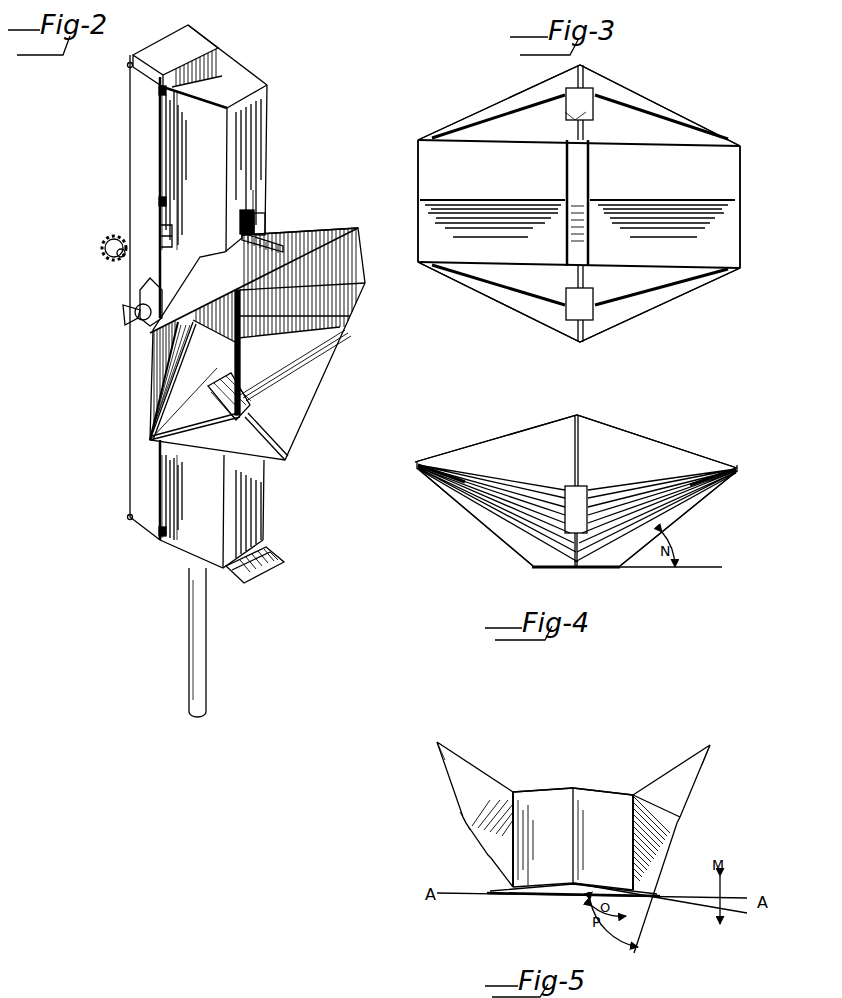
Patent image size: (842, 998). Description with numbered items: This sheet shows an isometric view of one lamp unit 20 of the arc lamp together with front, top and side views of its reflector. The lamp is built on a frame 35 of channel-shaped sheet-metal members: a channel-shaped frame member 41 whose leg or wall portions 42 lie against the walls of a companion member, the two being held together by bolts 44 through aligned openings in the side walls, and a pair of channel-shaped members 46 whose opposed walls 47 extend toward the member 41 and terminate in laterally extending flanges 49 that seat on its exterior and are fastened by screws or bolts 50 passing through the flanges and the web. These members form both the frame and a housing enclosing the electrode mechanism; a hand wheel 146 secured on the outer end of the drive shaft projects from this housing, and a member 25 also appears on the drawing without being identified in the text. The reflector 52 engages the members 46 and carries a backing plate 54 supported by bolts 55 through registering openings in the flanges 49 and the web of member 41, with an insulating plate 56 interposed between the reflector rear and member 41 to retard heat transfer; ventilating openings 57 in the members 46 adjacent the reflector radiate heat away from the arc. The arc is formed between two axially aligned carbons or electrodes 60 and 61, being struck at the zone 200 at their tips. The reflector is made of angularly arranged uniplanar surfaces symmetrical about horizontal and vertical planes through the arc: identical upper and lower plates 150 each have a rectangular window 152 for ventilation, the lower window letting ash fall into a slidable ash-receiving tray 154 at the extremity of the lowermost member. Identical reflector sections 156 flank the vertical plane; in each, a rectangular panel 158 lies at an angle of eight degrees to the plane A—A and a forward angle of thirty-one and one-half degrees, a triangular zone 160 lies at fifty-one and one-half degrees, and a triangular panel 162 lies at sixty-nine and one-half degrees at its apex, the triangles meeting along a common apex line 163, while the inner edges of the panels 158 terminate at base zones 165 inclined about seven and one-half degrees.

In FIG. 2, the lighting fixture assembly 20 is at (288, 214).
In FIG. 2, the support pole 25 is at (190, 600).
In FIG. 2, the frame 35 is at (126, 368).
In FIG. 2, the second channel-shaped frame member 41 is at (200, 58).
In FIG. 2, the leg or wall portions 42 is at (133, 110).
In FIG. 2, the bolts 44 is at (127, 65).
In FIG. 2, the channel-shaped members 46 is at (270, 102).
In FIG. 2, the opposed walls or leg portions 47 is at (186, 120).
In FIG. 2, the laterally extending flanges 49 is at (166, 140).
In FIG. 2, the screws or bolts 50 is at (160, 90).
In FIG. 2, the reflector 52 is at (328, 397).
In FIG. 3, the reflector 52 is at (473, 296).
In FIG. 4, the reflector 52 is at (545, 417).
In FIG. 5, the reflector 52 is at (553, 787).
In FIG. 2, the backing plate 54 is at (140, 303).
In FIG. 4, the backing plate 54 is at (540, 570).
In FIG. 5, the backing plate 54 is at (500, 897).
In FIG. 2, the bolts 55 is at (140, 290).
In FIG. 2, the insulating plate 56 is at (162, 243).
In FIG. 2, the ventilating openings 57 is at (263, 212).
In FIG. 2, the electrode or carbon 60 is at (352, 293).
In FIG. 2, the electrode or carbon 61 is at (242, 357).
In FIG. 2, the hand wheel 146 is at (105, 240).
In FIG. 2, the upper and lower plates or surfaces 150 is at (287, 248).
In FIG. 2, the window or opening 152 is at (256, 241).
In FIG. 3, the window or opening 152 is at (592, 92).
In FIG. 4, the window or opening 152 is at (585, 488).
In FIG. 5, the window or opening 152 is at (460, 817).
In FIG. 2, the ash-receiving receptacle or tray 154 is at (272, 553).
In FIG. 3, the reflector sections 156 is at (418, 205).
In FIG. 3, the reflector panel or zone 158 is at (468, 222).
In FIG. 4, the reflector panel or zone 158 is at (470, 508).
In FIG. 5, the reflector panel or zone 158 is at (588, 813).
In FIG. 3, the zone 160 is at (470, 132).
In FIG. 4, the zone 160 is at (523, 525).
In FIG. 5, the zone 160 is at (490, 840).
In FIG. 3, the zone or panel 162 is at (503, 108).
In FIG. 4, the zone or panel 162 is at (515, 447).
In FIG. 5, the zone or panel 162 is at (463, 792).
In FIG. 3, the apex line 163 is at (587, 118).
In FIG. 5, the apex line 163 is at (443, 780).
In FIG. 3, the zones 165 is at (582, 222).
In FIG. 4, the zones 165 is at (580, 568).
In FIG. 2, the zone 200 is at (250, 322).